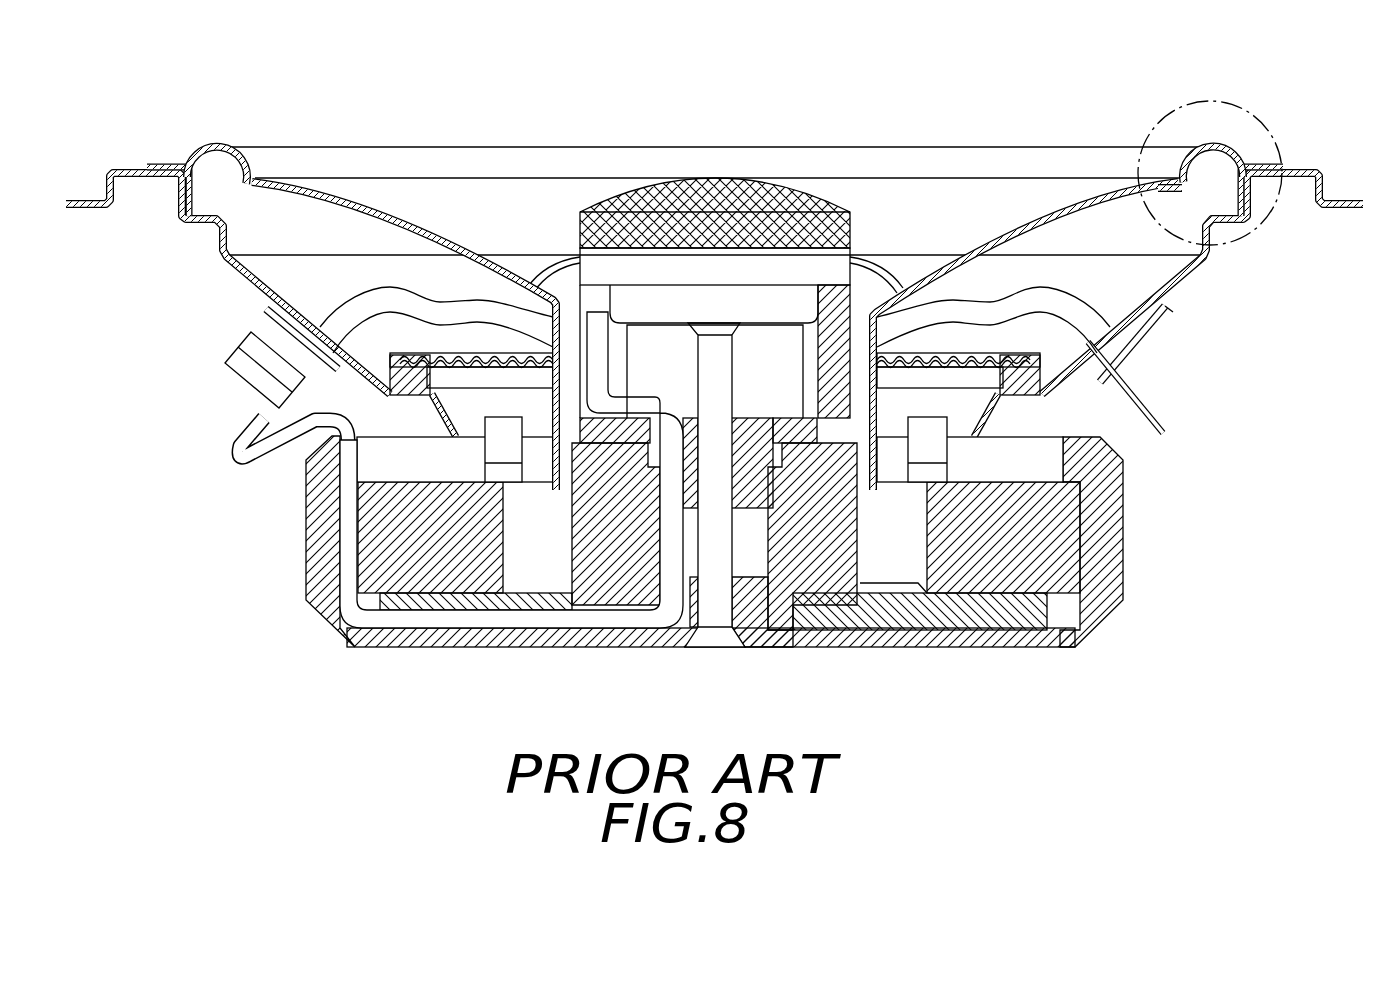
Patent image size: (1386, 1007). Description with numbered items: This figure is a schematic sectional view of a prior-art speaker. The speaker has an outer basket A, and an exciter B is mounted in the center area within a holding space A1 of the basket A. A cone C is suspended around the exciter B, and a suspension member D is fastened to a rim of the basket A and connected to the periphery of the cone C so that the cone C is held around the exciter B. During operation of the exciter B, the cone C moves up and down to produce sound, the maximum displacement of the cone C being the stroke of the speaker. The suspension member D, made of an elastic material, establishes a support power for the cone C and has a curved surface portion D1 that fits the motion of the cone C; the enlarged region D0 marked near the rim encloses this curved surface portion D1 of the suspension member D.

The basket A is at (1213, 288).
The holding space A1 is at (1098, 280).
The exciter B is at (823, 557).
The cone C is at (400, 222).
The suspension member D is at (1240, 143).
The edge region D0 is at (1240, 102).
The curved surface portion D1 is at (1195, 152).